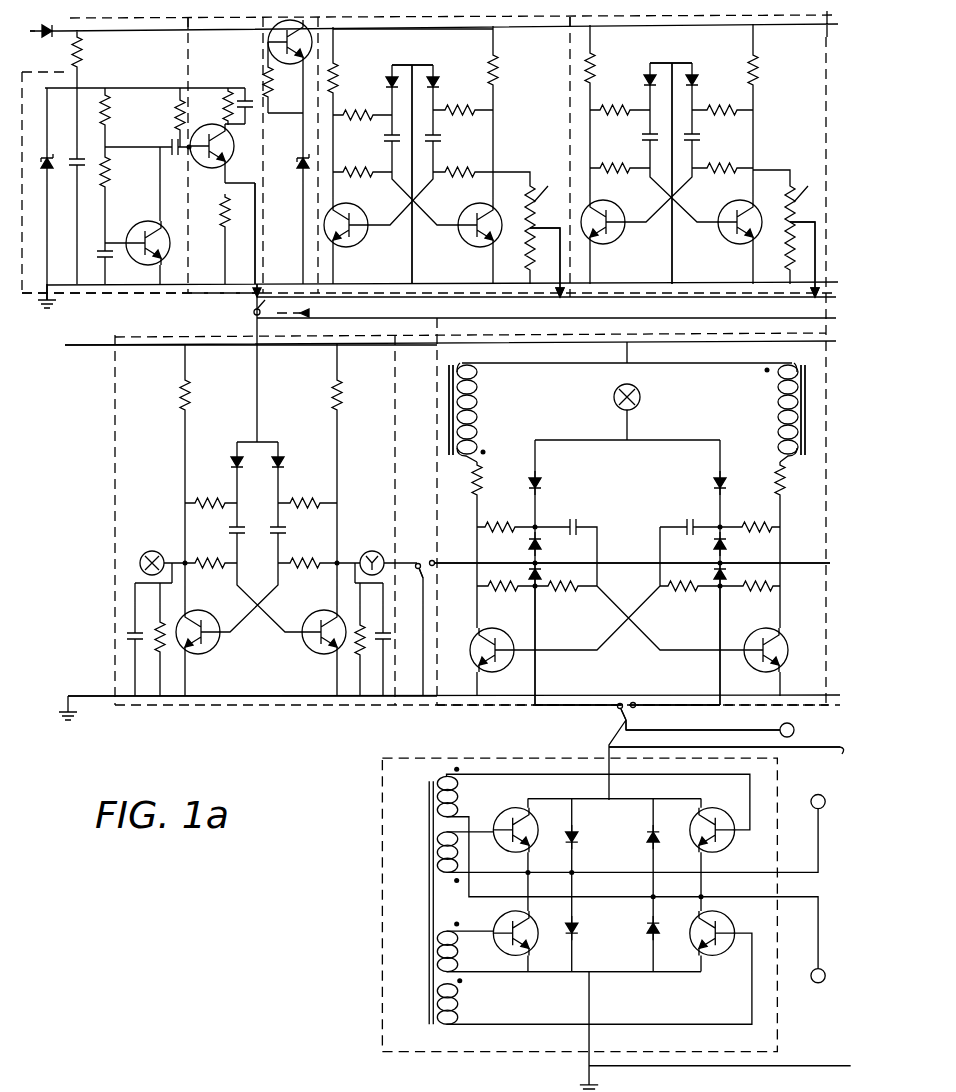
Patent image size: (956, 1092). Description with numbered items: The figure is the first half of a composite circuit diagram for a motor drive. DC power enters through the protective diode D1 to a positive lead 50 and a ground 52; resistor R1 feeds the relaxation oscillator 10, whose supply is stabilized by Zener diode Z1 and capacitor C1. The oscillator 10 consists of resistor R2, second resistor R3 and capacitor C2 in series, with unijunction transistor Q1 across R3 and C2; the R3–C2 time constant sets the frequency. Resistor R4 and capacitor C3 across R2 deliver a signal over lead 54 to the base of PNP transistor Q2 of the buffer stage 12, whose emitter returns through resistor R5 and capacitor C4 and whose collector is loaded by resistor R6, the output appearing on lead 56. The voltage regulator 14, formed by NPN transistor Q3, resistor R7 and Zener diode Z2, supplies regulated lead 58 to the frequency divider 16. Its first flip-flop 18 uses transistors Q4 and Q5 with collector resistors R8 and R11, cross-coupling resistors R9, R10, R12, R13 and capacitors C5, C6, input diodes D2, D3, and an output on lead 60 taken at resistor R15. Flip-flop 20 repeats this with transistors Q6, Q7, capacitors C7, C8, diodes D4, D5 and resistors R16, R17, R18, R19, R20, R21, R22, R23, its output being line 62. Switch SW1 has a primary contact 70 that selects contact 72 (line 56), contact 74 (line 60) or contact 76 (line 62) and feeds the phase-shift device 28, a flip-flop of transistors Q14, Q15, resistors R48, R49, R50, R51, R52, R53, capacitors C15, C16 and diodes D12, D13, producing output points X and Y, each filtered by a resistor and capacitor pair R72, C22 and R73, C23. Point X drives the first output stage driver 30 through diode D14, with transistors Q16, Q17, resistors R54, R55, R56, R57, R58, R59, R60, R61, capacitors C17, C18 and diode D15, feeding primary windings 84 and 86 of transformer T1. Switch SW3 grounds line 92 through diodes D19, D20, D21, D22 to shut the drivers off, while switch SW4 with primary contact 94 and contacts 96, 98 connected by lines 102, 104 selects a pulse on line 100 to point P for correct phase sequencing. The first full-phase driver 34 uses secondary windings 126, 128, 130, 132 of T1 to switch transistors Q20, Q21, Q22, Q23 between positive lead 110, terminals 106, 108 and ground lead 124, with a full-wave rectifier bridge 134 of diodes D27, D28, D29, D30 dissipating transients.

The relaxation oscillator 10 is at (130, 298).
The buffer stage 12 is at (202, 297).
The voltage regulator 14 is at (262, 18).
The five-stage frequency divider 16 is at (578, 12).
The flip-flop 18 is at (412, 159).
The flip-flop 20 is at (671, 159).
The phase-shift device 28 is at (193, 706).
The first output stage driver 30 is at (507, 706).
The first full-phase driver 34 is at (380, 1040).
The positive lead 50 is at (60, 38).
The ground 52 is at (80, 727).
The lead 54 is at (188, 152).
The lead 56 is at (264, 238).
The output lead 58 is at (370, 26).
The lead 60 is at (565, 230).
The line 62 is at (818, 224).
The primary contact 70 is at (264, 316).
The secondary contact 72 is at (256, 297).
The secondary contact 74 is at (558, 297).
The secondary contact 76 is at (812, 297).
The first winding 84 is at (478, 396).
The second winding 86 is at (777, 396).
The line 92 is at (464, 564).
The primary contact 94 is at (624, 720).
The secondary contact 96 is at (612, 709).
The secondary contact 98 is at (640, 708).
The line 100 is at (724, 726).
The line 102 is at (544, 676).
The line 104 is at (712, 676).
The terminal 106 is at (818, 978).
The terminal 108 is at (812, 808).
The positive lead 110 is at (727, 739).
The ground lead 124 is at (576, 1080).
The secondary winding 126 is at (456, 790).
The secondary winding 128 is at (436, 1000).
The secondary winding 130 is at (436, 950).
The secondary winding 132 is at (436, 856).
The full-wave rectifier bridge 134 is at (575, 885).
The diode D1 is at (52, 24).
The resistor R1 is at (83, 55).
The capacitor C1 is at (70, 160).
The Zener diode Z1 is at (45, 176).
The resistor R2 is at (112, 110).
The second resistor R3 is at (112, 177).
The capacitor C2 is at (97, 250).
The unijunction transistor Q1 is at (148, 221).
The resistor R4 is at (168, 114).
The capacitor C3 is at (170, 145).
The PNP transistor Q2 is at (234, 150).
The resistor R5 is at (224, 90).
The capacitor C4 is at (246, 92).
The resistor R6 is at (219, 220).
The NPN transistor Q3 is at (292, 68).
The resistor R7 is at (266, 66).
The Zener diode Z2 is at (300, 175).
The resistor R8 is at (338, 70).
The diode D2 is at (385, 82).
The diode D3 is at (440, 82).
The resistor R9 is at (372, 120).
The capacitor C5 is at (384, 142).
The resistor R10 is at (377, 176).
The resistor R12 is at (446, 114).
The capacitor C6 is at (440, 142).
The resistor R13 is at (476, 177).
The first NPN transistor Q4 is at (368, 245).
The second NPN transistor Q5 is at (462, 232).
The resistor R11 is at (500, 70).
The resistor R15 is at (528, 250).
The resistor R16 is at (594, 66).
The diode D4 is at (643, 80).
The diode D5 is at (698, 78).
The resistor R17 is at (632, 116).
The capacitor C7 is at (643, 142).
The resistor R18 is at (634, 175).
The resistor R20 is at (742, 116).
The capacitor C8 is at (698, 142).
The resistor R21 is at (740, 176).
The NPN transistor Q6 is at (624, 240).
The NPN transistor Q7 is at (720, 232).
The resistor R19 is at (759, 68).
The resistor R22 is at (800, 180).
The resistor R23 is at (786, 252).
The switch SW1 is at (232, 319).
The resistor R48 is at (192, 397).
The resistor R49 is at (333, 398).
The first diode D12 is at (233, 458).
The second diode D13 is at (283, 458).
The resistor R50 is at (222, 500).
The resistor R51 is at (325, 508).
The capacitor C15 is at (243, 528).
The capacitor C16 is at (283, 536).
The resistor R52 is at (224, 560).
The resistor R53 is at (325, 570).
The first output point X is at (390, 479).
The second output point Y is at (372, 563).
The capacitor C22 is at (128, 625).
The resistor R72 is at (155, 640).
The first NPN transistor Q14 is at (208, 650).
The second NPN transistor Q15 is at (320, 652).
The resistor R73 is at (366, 660).
The capacitor C23 is at (386, 628).
The switch SW3 is at (418, 560).
The transformer T1 is at (601, 639).
The resistor R54 is at (482, 492).
The resistor R55 is at (775, 498).
The diode D14 is at (541, 482).
The diode D15 is at (714, 482).
The resistor R56 is at (516, 522).
The resistor R57 is at (764, 522).
The capacitor C17 is at (576, 522).
The capacitor C18 is at (684, 522).
The diode D19 is at (528, 545).
The diode D21 is at (714, 546).
The diode D20 is at (542, 574).
The diode D22 is at (713, 574).
The resistor R58 is at (498, 594).
The resistor R59 is at (560, 594).
The resistor R60 is at (694, 594).
The resistor R61 is at (764, 594).
The first NPN transistor Q16 is at (475, 660).
The second NPN transistor Q17 is at (770, 668).
The switch SW4 is at (605, 740).
The point P is at (787, 730).
The NPN transistor Q20 is at (510, 806).
The NPN transistor Q21 is at (715, 848).
The NPN transistor Q22 is at (500, 918).
The NPN transistor Q23 is at (716, 958).
The diode D27 is at (576, 836).
The diode D28 is at (645, 846).
The diode D29 is at (576, 926).
The diode D30 is at (645, 938).